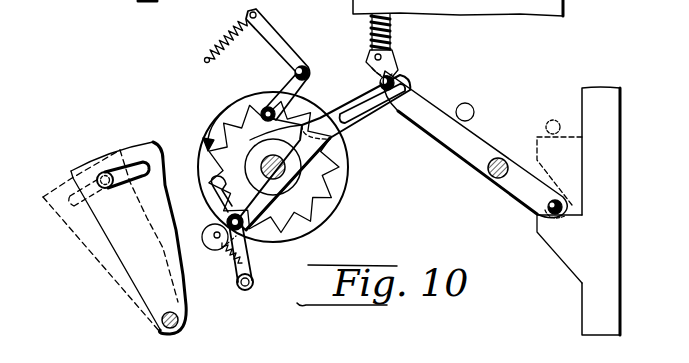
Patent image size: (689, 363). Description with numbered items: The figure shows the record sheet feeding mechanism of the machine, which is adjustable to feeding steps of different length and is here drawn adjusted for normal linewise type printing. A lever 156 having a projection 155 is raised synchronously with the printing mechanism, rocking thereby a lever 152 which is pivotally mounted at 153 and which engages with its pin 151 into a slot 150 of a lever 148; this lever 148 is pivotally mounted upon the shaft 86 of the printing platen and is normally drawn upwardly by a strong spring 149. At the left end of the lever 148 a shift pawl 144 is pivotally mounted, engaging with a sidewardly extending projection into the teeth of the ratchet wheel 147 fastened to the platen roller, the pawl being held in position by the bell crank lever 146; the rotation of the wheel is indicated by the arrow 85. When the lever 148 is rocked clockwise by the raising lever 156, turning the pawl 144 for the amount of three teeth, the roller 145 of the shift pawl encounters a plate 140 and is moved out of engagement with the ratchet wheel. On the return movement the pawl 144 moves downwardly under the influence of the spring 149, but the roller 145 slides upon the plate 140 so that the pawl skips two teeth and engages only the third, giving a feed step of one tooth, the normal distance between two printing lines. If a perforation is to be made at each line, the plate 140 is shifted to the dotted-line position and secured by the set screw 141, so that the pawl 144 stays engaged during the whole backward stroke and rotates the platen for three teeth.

The direction arrow 85 is at (230, 106).
The shaft 86 is at (273, 179).
The plate 140 is at (115, 252).
The set screw 141 is at (102, 175).
The shift pawl 144 is at (248, 258).
The roller 145 is at (240, 265).
The bell crank lever 146 is at (277, 44).
The ratchet wheel 147 is at (340, 183).
The lever 148 is at (347, 140).
The spring 149 is at (368, 30).
The slot 150 is at (369, 103).
The pin 151 is at (393, 79).
The lever 152 is at (495, 152).
The pivot 153 is at (497, 200).
The projection 155 is at (553, 240).
The lever 156 is at (588, 314).